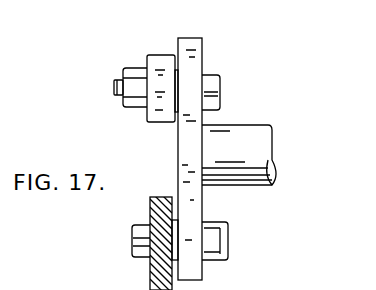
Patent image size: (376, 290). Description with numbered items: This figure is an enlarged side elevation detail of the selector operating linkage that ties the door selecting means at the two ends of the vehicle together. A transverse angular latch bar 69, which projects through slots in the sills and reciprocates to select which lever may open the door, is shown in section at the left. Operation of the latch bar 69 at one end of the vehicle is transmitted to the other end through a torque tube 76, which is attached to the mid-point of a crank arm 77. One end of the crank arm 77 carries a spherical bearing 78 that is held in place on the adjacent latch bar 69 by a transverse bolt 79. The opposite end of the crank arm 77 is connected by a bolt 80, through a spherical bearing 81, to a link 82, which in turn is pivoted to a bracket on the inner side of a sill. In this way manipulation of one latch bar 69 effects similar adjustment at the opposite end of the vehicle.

The latch bar 69 is at (150, 266).
The torque tube 76 is at (267, 148).
The crank arm 77 is at (192, 162).
The spherical bearing 78 is at (207, 221).
The transverse bolt 79 is at (132, 238).
The bolt 80 is at (220, 84).
The spherical bearing 81 is at (147, 114).
The link 82 is at (163, 57).